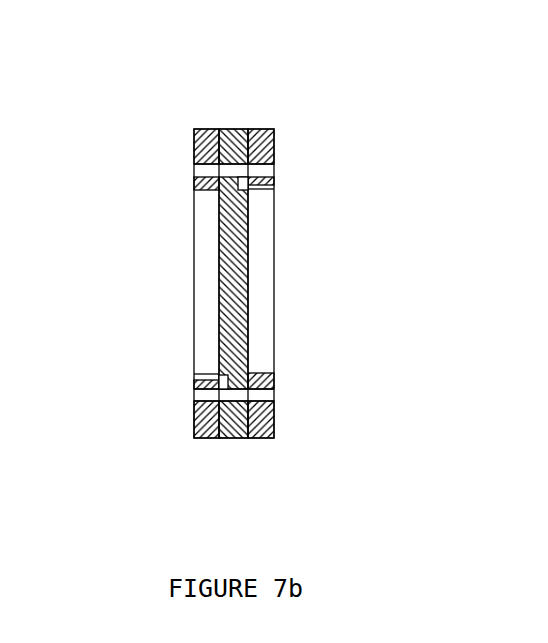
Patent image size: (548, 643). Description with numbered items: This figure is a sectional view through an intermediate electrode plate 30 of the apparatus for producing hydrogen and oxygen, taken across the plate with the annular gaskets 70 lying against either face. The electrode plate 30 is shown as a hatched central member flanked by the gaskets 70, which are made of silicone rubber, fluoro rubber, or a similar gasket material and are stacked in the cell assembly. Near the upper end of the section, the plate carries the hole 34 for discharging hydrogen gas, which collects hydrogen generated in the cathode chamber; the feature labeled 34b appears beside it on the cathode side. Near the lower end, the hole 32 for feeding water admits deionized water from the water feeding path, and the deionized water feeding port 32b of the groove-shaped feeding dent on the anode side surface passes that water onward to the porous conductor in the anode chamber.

The annular gasket 70 is at (202, 128).
The intermediate electrode plate 30 is at (235, 128).
The hole for discharging hydrogen gas 34 is at (232, 171).
The upper plate notch 34b is at (250, 189).
The hole for feeding water 32 is at (235, 395).
The deionized water feeding port 32b is at (217, 378).